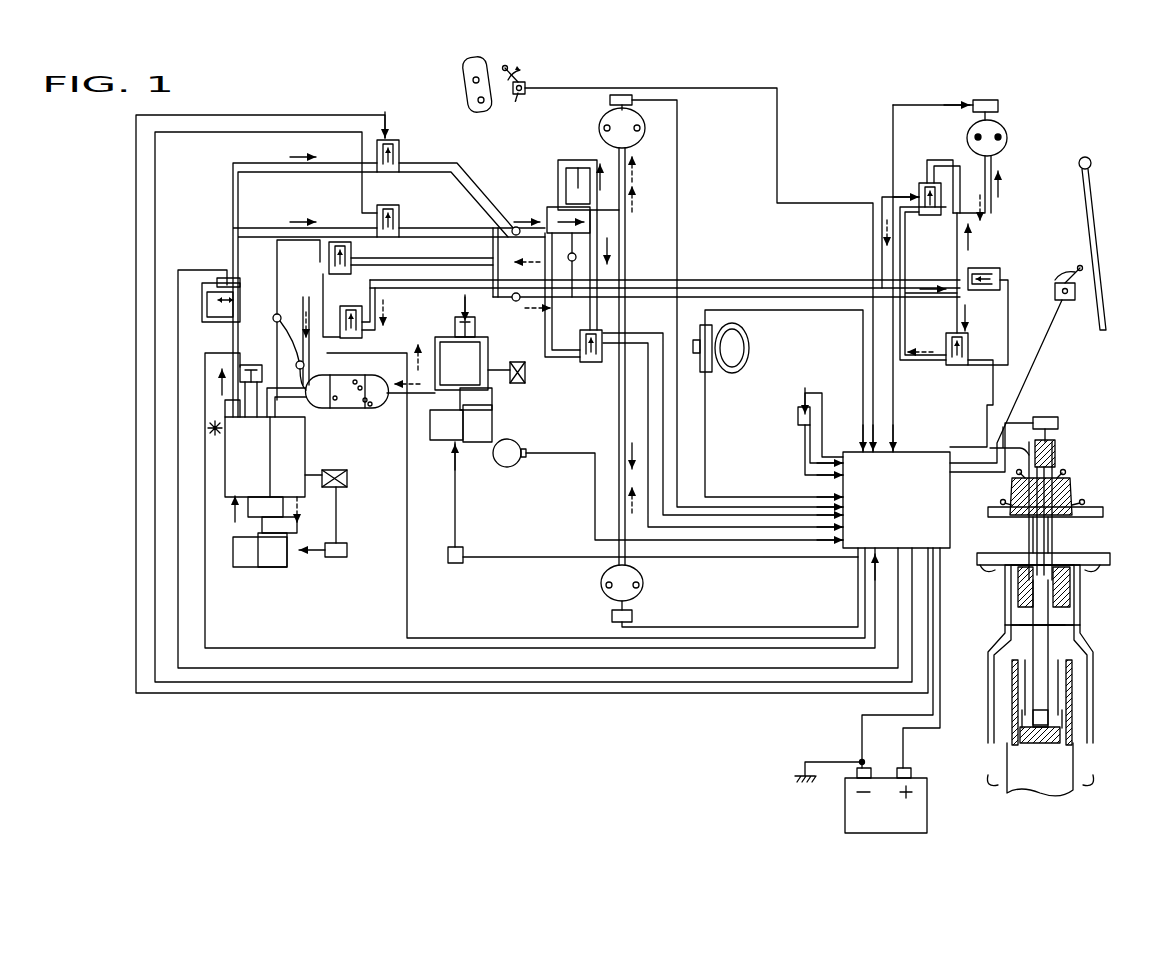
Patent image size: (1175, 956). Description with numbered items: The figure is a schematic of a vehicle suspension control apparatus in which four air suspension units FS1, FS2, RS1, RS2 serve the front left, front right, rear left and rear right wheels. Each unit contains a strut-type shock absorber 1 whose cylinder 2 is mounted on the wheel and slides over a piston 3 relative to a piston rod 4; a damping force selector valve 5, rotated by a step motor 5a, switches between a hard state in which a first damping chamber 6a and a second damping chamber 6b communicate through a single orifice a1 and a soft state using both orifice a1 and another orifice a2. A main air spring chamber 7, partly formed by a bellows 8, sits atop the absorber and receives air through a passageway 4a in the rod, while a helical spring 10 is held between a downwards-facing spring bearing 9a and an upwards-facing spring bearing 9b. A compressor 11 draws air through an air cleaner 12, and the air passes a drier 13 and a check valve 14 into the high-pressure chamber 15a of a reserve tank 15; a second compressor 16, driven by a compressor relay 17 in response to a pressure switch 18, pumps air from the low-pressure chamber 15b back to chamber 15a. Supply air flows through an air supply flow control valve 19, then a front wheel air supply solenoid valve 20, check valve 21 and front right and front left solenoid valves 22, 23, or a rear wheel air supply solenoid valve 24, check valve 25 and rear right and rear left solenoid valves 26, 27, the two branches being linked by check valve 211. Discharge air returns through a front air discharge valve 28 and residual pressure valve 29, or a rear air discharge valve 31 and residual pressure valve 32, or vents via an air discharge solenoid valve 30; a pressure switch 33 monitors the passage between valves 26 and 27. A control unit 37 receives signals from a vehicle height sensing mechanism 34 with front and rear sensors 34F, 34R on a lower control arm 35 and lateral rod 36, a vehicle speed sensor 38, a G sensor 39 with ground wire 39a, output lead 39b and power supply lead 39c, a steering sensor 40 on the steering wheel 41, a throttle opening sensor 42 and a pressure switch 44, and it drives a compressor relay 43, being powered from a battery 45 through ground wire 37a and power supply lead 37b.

The shock absorber 1 is at (1012, 785).
The cylinder 2 is at (1075, 712).
The piston 3 is at (1075, 752).
The piston rod 4 is at (1080, 612).
The passageway 4a is at (1057, 532).
The damping force selector valve 5 is at (1045, 745).
The step motor 5a is at (628, 95).
The first damping chamber 6a is at (1015, 678).
The second damping chamber 6b is at (987, 780).
The main air spring chamber 7 is at (1080, 638).
The bellows 8 is at (1093, 680).
The downwards-facing spring bearing 9a is at (1105, 556).
The upwards-facing spring bearing 9b is at (1095, 780).
The helical spring 10 is at (1100, 565).
The compressor 11 is at (475, 442).
The air cleaner 12 is at (522, 385).
The drier 13 is at (360, 409).
The check valve 14 is at (305, 405).
The reserve tank 15 is at (247, 505).
The high-pressure chamber 15a is at (225, 478).
The low-pressure chamber 15b is at (307, 458).
The compressor 16 is at (270, 567).
The compressor relay 17 is at (336, 557).
The pressure switch 18 is at (347, 485).
The air supply flow control valve 19 is at (245, 285).
The front wheel air supply solenoid valve 20 is at (400, 148).
The check valve 21 is at (514, 227).
The front right solenoid valve 22 is at (558, 180).
The front left solenoid valve 23 is at (592, 362).
The rear wheel air supply solenoid valve 24 is at (399, 215).
The check valve 25 is at (477, 327).
The rear right solenoid valve 26 is at (920, 183).
The rear left solenoid valve 27 is at (968, 340).
The front air discharge valve 28 is at (352, 252).
The residual pressure valve 29 is at (273, 318).
The air discharge solenoid valve 30 is at (437, 365).
The rear air discharge valve 31 is at (363, 332).
The residual pressure valve 32 is at (303, 340).
The pressure switch 33 is at (982, 268).
The vehicle height sensing mechanism 34 is at (524, 72).
The front vehicle height sensor 34F is at (518, 96).
The rear vehicle height sensor 34R is at (1050, 283).
The lower control arm 35 is at (463, 70).
The lateral rod 36 is at (1110, 292).
The control unit 37 is at (900, 452).
The power supply ground 37a is at (860, 715).
The power supply lead 37b is at (903, 748).
The vehicle speed sensor 38 is at (708, 373).
The G sensor 39 is at (798, 415).
The ground wire 39a is at (810, 450).
The output lead 39b is at (805, 468).
The power supply lead 39c is at (822, 393).
The steering sensor 40 is at (710, 372).
The steering wheel 41 is at (750, 345).
The throttle opening sensor 42 is at (510, 467).
The compressor relay 43 is at (463, 550).
The pressure switch 44 is at (262, 355).
The battery 45 is at (845, 818).
The check valve 211 is at (578, 258).
The orifice a1 is at (1070, 660).
The orifice a2 is at (1022, 735).
The front left air suspension unit FS1 is at (645, 588).
The front right air suspension unit FS2 is at (605, 122).
The rear left air suspension unit RS1 is at (1087, 493).
The rear right air suspension unit RS2 is at (1005, 130).